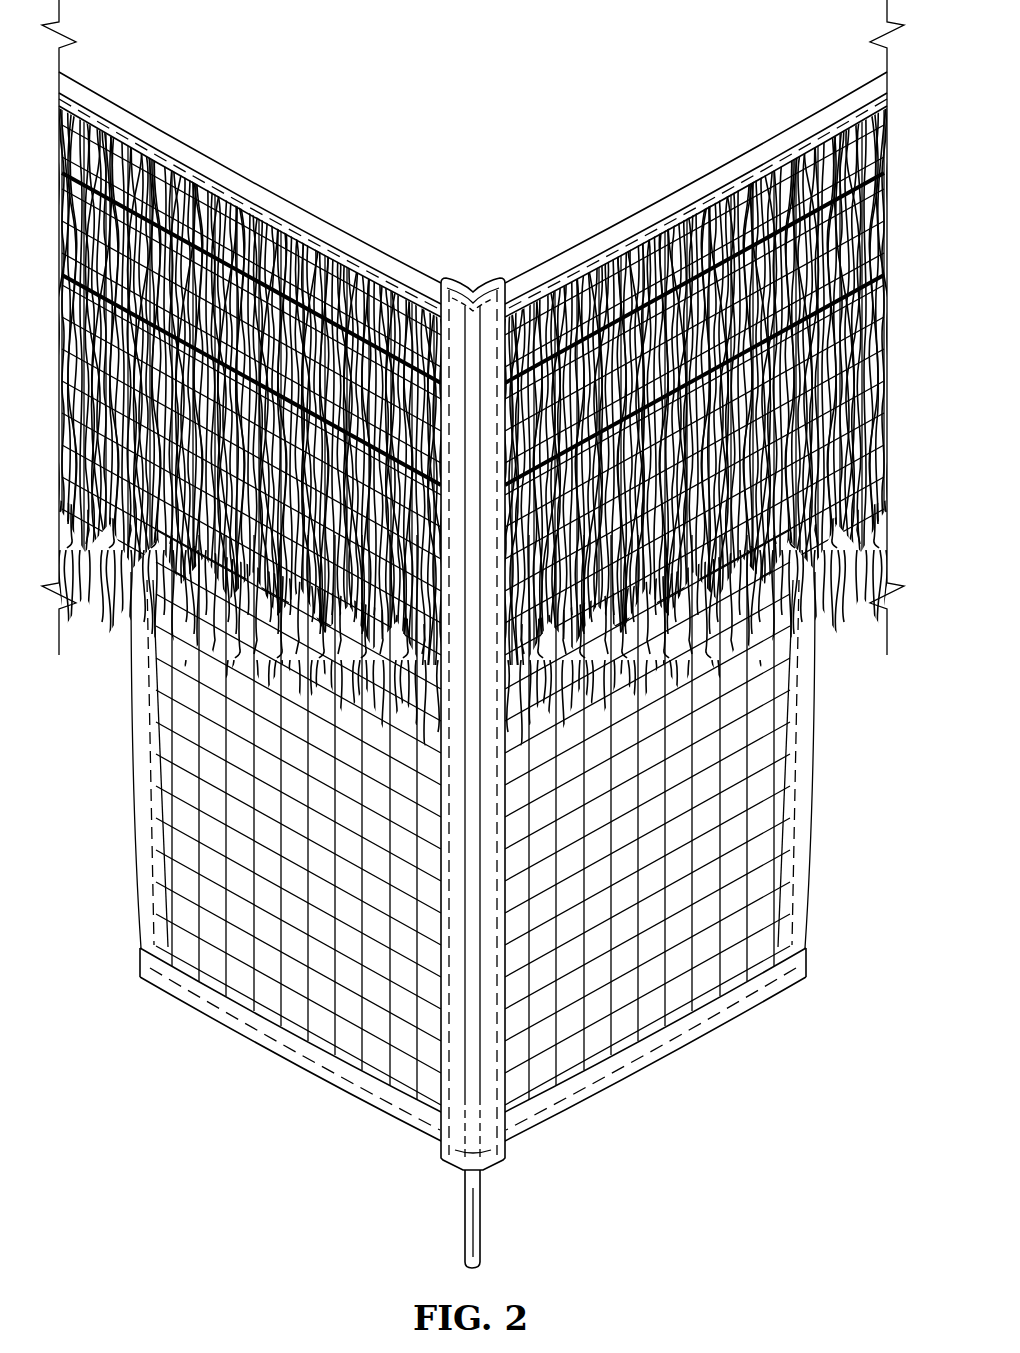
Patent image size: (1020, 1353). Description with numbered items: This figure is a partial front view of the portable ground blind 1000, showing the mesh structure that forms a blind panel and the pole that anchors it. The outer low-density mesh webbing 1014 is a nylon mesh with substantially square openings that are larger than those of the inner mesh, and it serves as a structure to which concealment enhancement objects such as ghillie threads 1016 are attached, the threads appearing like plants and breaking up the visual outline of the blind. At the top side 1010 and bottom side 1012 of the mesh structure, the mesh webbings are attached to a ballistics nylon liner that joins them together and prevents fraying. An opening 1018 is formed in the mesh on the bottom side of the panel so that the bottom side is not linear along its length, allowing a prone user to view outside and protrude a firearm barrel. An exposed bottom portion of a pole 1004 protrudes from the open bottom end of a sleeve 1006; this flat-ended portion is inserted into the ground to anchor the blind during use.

The portable ground blind 1000 is at (475, 634).
The pole 1004 is at (463, 1218).
The sleeve 1006 is at (460, 290).
The top side 1010 is at (690, 182).
The bottom side 1012 is at (672, 1052).
The outer low-density mesh webbing 1014 is at (325, 1017).
The ghillie threads 1016 is at (80, 600).
The opening 1018 is at (812, 777).